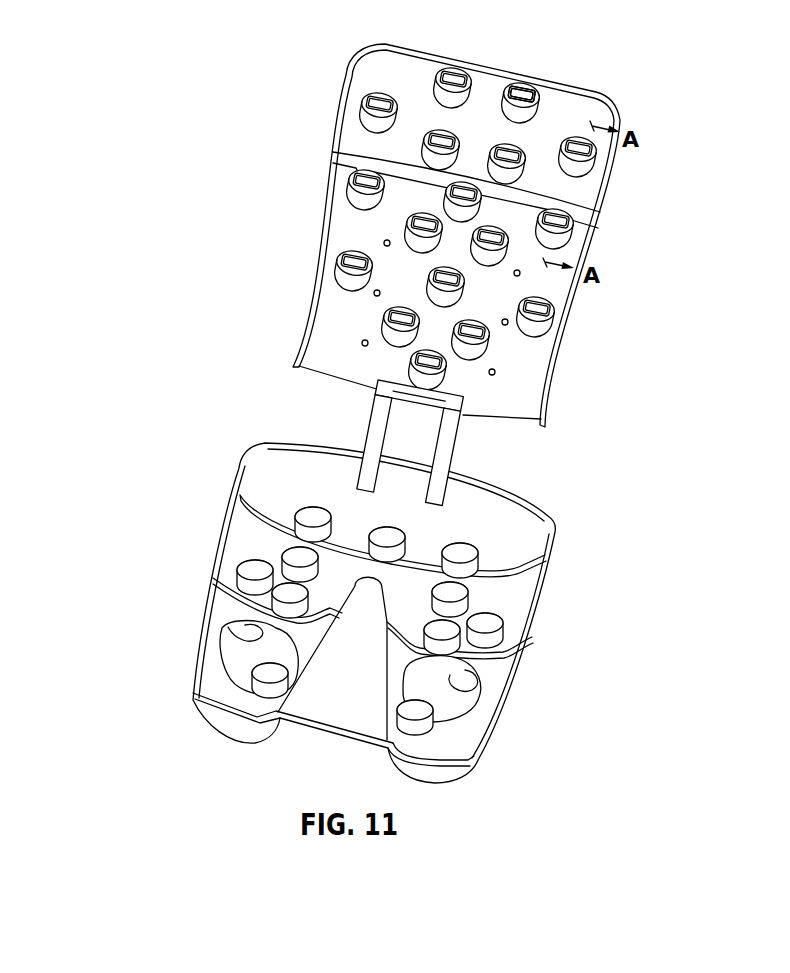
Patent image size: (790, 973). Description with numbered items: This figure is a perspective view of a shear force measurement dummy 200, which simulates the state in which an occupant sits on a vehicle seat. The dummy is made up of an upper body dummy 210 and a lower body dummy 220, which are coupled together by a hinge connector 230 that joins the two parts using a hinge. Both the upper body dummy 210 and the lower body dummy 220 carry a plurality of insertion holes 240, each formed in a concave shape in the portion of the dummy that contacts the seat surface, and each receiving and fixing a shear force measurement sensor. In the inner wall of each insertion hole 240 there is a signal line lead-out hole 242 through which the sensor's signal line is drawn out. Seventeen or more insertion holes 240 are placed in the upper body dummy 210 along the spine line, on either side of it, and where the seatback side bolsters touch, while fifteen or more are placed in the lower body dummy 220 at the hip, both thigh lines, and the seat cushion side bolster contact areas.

The shear force measurement dummy 200 is at (158, 292).
The upper body dummy 210 is at (315, 200).
The lower body dummy 220 is at (211, 518).
The hinge connector 230 is at (376, 430).
The insertion hole 240 is at (540, 110).
The signal line lead-out hole 242 is at (517, 93).